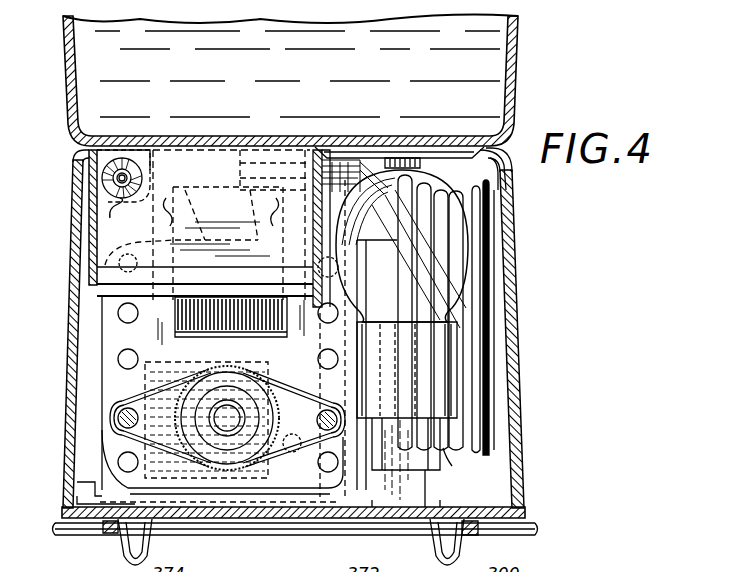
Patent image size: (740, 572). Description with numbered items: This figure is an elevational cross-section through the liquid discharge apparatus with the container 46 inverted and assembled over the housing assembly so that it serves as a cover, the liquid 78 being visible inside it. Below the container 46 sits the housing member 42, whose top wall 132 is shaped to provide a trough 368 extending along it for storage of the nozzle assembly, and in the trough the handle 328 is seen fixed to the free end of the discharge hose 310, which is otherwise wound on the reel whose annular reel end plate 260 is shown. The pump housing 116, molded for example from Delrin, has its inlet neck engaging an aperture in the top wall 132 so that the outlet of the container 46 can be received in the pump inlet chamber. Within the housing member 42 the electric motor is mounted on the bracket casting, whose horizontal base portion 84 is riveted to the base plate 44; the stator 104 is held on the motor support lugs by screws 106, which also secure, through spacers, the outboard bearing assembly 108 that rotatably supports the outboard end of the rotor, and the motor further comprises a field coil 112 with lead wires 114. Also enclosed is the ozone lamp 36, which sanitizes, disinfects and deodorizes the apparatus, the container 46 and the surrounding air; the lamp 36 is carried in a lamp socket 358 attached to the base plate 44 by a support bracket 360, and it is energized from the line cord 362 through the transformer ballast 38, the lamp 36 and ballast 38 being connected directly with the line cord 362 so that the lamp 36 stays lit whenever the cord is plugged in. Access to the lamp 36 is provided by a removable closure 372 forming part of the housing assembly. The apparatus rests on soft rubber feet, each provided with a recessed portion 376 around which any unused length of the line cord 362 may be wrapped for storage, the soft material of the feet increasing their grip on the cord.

The container 46 is at (528, 62).
The liquid 78 is at (455, 76).
The removable closure 372 is at (442, 150).
The top wall 132 is at (223, 146).
The housing member 42 is at (516, 418).
The ozone lamp 36 is at (505, 173).
The transformer ballast 38 is at (273, 536).
The line cord 362 is at (100, 537).
The recessed portion 376 is at (155, 541).
The base plate 44 is at (463, 539).
The handle 328 is at (127, 140).
The trough 368 is at (120, 158).
The discharge hose 310 is at (297, 340).
The lead wires 114 is at (194, 229).
The field coil 112 is at (160, 328).
The pump housing 116 is at (370, 158).
The reel end plate 260 is at (490, 297).
The lamp socket 358 is at (440, 378).
The support bracket 360 is at (418, 490).
The stator 104 is at (100, 422).
The screws 106 is at (224, 364).
The outboard bearing assembly 108 is at (110, 447).
The base portion 84 is at (76, 490).